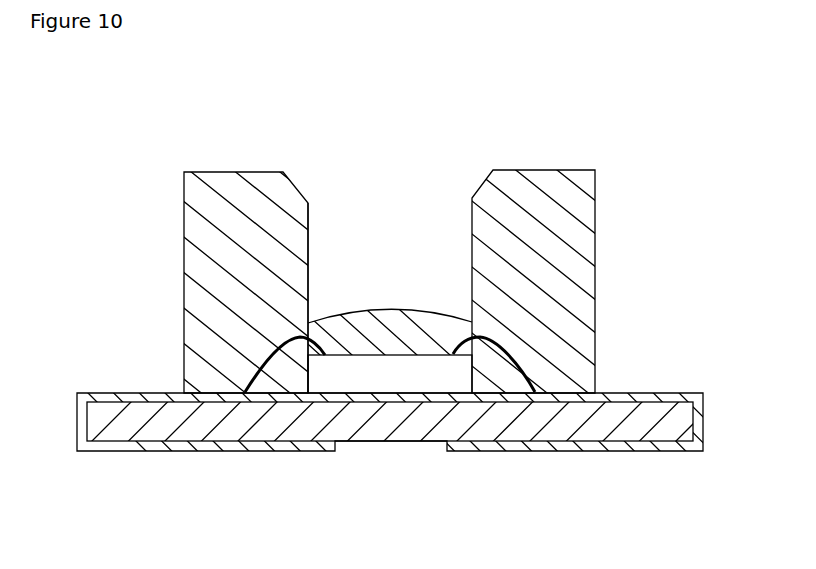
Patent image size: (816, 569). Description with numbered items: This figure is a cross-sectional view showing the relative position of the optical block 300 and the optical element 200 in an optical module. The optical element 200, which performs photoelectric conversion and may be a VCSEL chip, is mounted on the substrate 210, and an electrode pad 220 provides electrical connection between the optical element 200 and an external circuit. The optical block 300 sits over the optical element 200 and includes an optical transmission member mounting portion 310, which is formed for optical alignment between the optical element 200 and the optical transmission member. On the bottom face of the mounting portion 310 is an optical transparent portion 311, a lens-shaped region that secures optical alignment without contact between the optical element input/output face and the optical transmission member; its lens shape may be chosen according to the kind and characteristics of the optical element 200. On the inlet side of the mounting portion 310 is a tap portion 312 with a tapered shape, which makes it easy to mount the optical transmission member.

The optical block 300 is at (184, 172).
The optical transmission member mounting portion 310 is at (308, 263).
The tap portion 312 is at (479, 188).
The optical transparent portion 311 is at (455, 318).
The optical element 200 is at (352, 378).
The substrate 210 is at (388, 441).
The electrode pad 220 is at (120, 393).